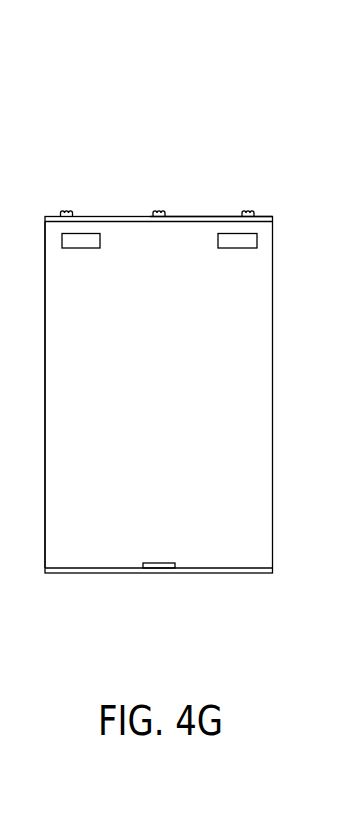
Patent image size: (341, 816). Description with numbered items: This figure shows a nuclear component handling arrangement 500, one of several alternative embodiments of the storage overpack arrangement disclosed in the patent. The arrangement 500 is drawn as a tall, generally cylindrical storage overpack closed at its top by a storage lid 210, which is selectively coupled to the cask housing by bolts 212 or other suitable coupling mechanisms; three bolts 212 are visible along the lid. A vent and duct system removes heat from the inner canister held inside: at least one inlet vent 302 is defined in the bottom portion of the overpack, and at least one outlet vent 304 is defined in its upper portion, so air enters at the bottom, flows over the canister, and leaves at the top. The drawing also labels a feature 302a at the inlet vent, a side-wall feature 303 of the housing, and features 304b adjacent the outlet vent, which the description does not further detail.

The nuclear component handling arrangement 500 is at (136, 134).
The inlet vent 302 is at (31, 212).
The housing bottom opening 302a is at (158, 570).
The housing side wall 303 is at (45, 303).
The outlet vent 304 is at (97, 211).
The cover vent 304b is at (99, 237).
The storage lid 210 is at (212, 216).
The bolts 212 is at (63, 211).